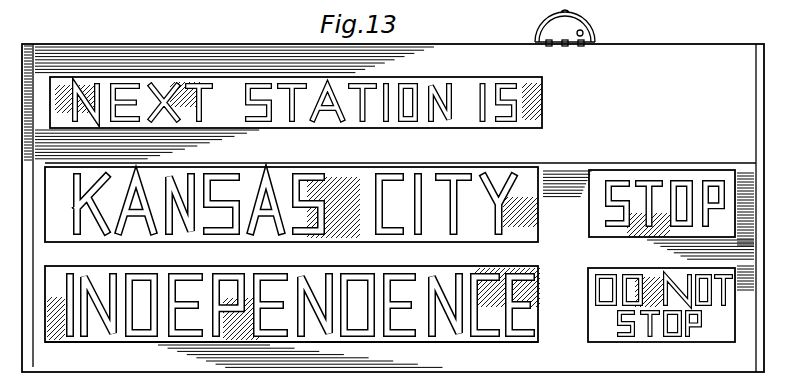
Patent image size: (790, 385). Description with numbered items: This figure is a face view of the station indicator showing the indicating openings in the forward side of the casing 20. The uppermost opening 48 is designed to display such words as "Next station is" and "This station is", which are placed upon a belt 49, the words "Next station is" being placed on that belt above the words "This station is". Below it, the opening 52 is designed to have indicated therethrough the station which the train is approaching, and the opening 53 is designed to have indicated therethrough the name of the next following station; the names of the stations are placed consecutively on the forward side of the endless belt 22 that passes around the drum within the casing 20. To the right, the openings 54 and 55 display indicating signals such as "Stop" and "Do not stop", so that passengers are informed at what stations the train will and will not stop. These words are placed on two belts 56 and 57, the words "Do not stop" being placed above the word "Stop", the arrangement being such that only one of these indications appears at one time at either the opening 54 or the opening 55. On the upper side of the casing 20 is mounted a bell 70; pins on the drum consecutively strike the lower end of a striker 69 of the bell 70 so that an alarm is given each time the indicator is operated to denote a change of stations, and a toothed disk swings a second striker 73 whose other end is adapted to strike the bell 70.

The casing 20 is at (646, 54).
The endless belt 22 is at (462, 274).
The opening 48 is at (542, 104).
The belt 49 is at (541, 121).
The opening 52 is at (539, 222).
The opening 53 is at (536, 282).
The opening 54 is at (672, 170).
The opening 55 is at (596, 343).
The belt 56 is at (726, 171).
The belt 57 is at (722, 328).
The striker 69 is at (540, 40).
The bell 70 is at (565, 26).
The striker 73 is at (584, 33).